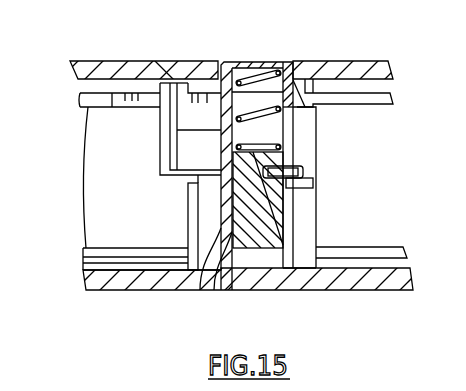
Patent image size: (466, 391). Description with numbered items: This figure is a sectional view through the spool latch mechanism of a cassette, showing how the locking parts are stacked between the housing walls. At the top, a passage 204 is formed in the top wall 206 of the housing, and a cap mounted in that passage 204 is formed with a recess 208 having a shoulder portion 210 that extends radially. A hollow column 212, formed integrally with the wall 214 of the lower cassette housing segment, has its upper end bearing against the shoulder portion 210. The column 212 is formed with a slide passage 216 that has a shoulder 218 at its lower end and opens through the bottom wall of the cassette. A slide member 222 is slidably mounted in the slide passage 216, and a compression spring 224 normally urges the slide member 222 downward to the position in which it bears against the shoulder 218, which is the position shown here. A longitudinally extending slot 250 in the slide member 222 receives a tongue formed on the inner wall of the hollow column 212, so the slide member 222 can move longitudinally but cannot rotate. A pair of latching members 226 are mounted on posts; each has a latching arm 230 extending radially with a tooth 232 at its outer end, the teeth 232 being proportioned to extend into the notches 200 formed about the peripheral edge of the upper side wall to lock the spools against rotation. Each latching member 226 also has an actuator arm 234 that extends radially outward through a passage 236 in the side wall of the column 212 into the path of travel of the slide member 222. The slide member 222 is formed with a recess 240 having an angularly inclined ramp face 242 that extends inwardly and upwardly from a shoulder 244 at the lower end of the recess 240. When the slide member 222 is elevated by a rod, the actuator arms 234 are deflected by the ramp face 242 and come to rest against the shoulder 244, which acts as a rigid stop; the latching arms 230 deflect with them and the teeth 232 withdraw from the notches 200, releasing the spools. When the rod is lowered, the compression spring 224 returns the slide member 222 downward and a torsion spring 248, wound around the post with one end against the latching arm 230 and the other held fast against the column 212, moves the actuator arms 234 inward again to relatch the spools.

The notches 200 is at (113, 105).
The passage 204 is at (219, 68).
The top wall 206 is at (116, 66).
The recess 208 is at (247, 70).
The shoulder portion 210 is at (292, 61).
The hollow column 212 is at (287, 141).
The wall 214 is at (362, 276).
The slide passage 216 is at (280, 118).
The shoulder 218 is at (295, 268).
The slide member 222 is at (235, 180).
The compression spring 224 is at (178, 129).
The latching members 226 is at (317, 157).
The latching arm 230 is at (181, 155).
The tooth 232 is at (178, 88).
The actuator arms 234 is at (302, 172).
The passage 236 is at (300, 195).
The recess 240 is at (225, 198).
The ramp face 242 is at (223, 213).
The shoulder 244 is at (272, 243).
The torsion spring 248 is at (315, 186).
The slot 250 is at (199, 288).